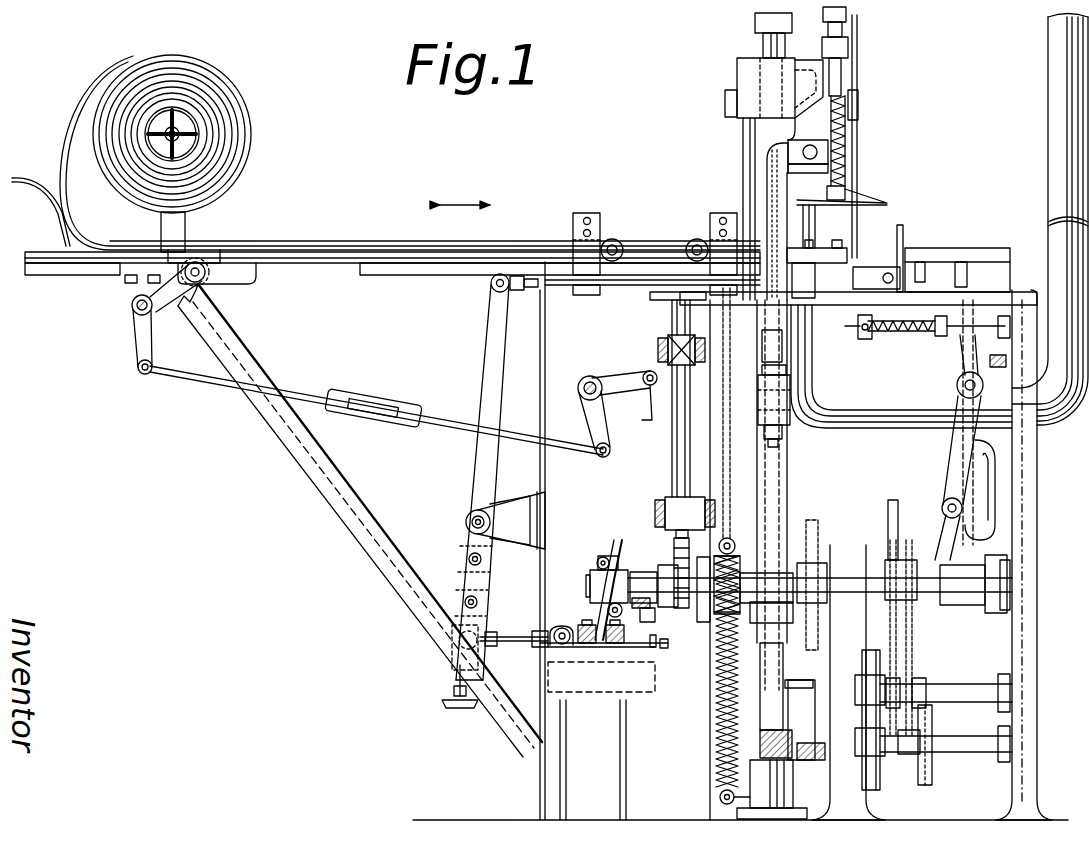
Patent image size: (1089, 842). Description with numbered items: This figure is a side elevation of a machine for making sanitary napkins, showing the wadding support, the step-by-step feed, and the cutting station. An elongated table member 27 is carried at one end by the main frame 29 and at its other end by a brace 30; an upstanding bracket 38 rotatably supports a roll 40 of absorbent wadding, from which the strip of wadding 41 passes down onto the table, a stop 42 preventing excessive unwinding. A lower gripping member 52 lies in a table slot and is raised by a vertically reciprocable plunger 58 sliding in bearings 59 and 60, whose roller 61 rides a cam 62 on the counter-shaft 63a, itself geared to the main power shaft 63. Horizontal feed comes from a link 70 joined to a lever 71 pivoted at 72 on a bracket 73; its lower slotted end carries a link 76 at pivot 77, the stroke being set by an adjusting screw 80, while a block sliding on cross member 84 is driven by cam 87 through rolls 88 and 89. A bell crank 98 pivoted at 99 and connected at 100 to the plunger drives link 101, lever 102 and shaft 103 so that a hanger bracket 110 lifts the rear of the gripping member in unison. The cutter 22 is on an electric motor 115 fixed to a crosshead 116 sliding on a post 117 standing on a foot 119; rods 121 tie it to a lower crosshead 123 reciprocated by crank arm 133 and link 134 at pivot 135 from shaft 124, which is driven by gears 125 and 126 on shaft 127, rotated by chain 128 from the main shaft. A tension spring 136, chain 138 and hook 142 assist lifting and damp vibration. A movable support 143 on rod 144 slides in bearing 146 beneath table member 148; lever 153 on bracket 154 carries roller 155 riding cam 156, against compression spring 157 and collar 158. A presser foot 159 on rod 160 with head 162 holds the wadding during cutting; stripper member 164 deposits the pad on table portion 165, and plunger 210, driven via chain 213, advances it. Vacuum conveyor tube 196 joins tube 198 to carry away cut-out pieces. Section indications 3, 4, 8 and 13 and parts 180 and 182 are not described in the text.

The section line 3 is at (1045, 190).
The section line 4 is at (910, 126).
The section line 8 is at (730, 185).
The section line 13 is at (160, 218).
The cutter 22 is at (858, 72).
The table member 27 is at (426, 264).
The main frame 29 is at (560, 406).
The brace 30 is at (305, 466).
The upstanding bracket 38 is at (185, 222).
The roll of absorbent wadding 40 is at (236, 80).
The strip of wadding 41 is at (66, 190).
The stop 42 is at (42, 200).
The lower gripping member 52 is at (203, 250).
The plunger 58 is at (662, 300).
The bearing 59 is at (657, 346).
The bearing 60 is at (664, 514).
The roller 61 is at (675, 545).
The cam 62 is at (658, 634).
The main power shaft 63 is at (868, 576).
The counter-shaft 63a is at (590, 582).
The link 70 is at (510, 291).
The lever 71 is at (493, 326).
The pivot 72 is at (466, 524).
The bracket 73 is at (523, 540).
The link 76 is at (517, 643).
The pivot 77 is at (478, 636).
The adjusting screw 80 is at (452, 690).
The cross member 84 is at (660, 680).
The cam 87 is at (612, 545).
The roll 88 is at (587, 648).
The roll 89 is at (613, 648).
The bell crank 98 is at (607, 374).
The pivot 99 is at (585, 380).
The pivotal connection 100 is at (650, 388).
The link 101 is at (450, 410).
The lever 102 is at (142, 328).
The shaft 103 is at (132, 302).
The hanger bracket 110 is at (244, 285).
The electric motor 115 is at (818, 128).
The crosshead 116 is at (745, 82).
The post 117 is at (763, 42).
The foot 119 is at (762, 780).
The rod 121 is at (742, 148).
The crosshead 123 is at (788, 400).
The shaft 124 is at (913, 760).
The gear 125 is at (868, 772).
The gear 126 is at (868, 650).
The shaft 127 is at (957, 694).
The chain 128 is at (912, 640).
The crank arm 133 is at (812, 748).
The link 134 is at (720, 705).
The pivot 135 is at (745, 718).
The tension spring 136 is at (712, 690).
The chain 138 is at (740, 450).
The hook 142 is at (757, 412).
The support 143 is at (958, 258).
The rod 144 is at (1005, 365).
The bearing 146 is at (963, 345).
The table member 148 is at (905, 334).
The lever 153 is at (957, 438).
The bracket 154 is at (955, 520).
The roller 155 is at (988, 600).
The cam 156 is at (1000, 615).
The compression spring 157 is at (862, 332).
The collar 158 is at (866, 318).
The presser foot 159 is at (835, 206).
The rod 160 is at (840, 165).
The head 162 is at (848, 12).
The stripper member 164 is at (908, 252).
The table portion 165 is at (868, 275).
The column 180 is at (770, 192).
The rods 182 is at (818, 222).
The vacuum conveyor tube 196 is at (888, 420).
The vacuum conveyor tube 198 is at (1052, 102).
The plunger 210 is at (882, 262).
The chain 213 is at (886, 508).